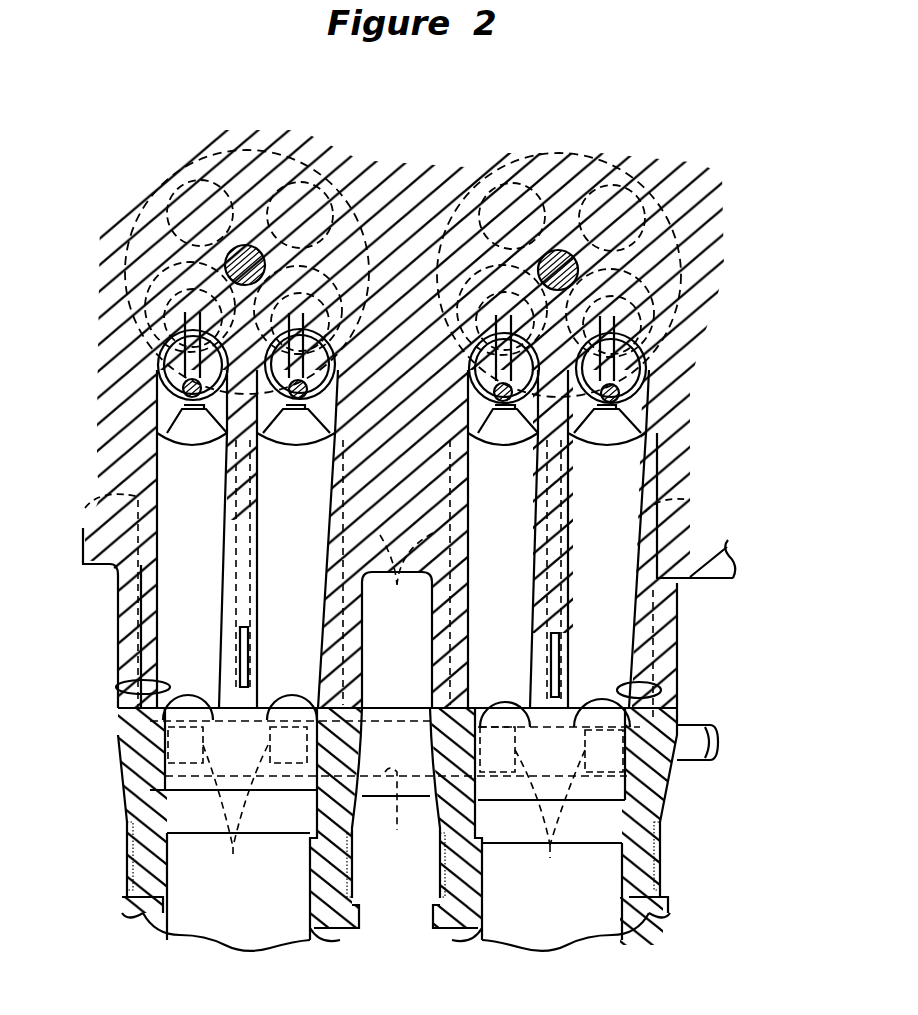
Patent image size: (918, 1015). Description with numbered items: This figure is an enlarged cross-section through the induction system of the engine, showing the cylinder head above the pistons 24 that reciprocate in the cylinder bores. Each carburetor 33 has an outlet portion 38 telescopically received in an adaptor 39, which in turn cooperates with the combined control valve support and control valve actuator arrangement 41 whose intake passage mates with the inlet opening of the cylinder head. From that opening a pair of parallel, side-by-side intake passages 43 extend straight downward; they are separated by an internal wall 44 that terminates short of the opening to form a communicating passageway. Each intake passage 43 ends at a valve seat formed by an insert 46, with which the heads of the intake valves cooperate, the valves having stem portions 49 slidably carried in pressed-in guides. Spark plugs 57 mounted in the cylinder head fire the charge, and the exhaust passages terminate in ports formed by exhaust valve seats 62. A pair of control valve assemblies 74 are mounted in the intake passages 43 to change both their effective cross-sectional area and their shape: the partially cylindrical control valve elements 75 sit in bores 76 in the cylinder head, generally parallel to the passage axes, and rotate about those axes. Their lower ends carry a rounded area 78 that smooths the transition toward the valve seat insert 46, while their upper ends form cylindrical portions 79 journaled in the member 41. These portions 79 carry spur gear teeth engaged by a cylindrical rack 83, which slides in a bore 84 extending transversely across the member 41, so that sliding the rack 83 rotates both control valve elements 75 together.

The piston 24 is at (620, 162).
The carburetor 33 is at (650, 943).
The outlet portion 38 is at (657, 892).
The adaptor 39 is at (120, 799).
The combined control valve support and control valve actuator arrangement 41 is at (670, 797).
The intake passage 43 is at (660, 690).
The internal wall 44 is at (577, 572).
The valve seat insert 46 is at (700, 280).
The stem portion 49 is at (180, 389).
The spark plug 57 is at (556, 252).
The exhaust valve seat 62 is at (682, 225).
The control valve assembly 74 is at (207, 662).
The control valve element 75 is at (190, 580).
The bore 76 is at (397, 592).
The rounded area 78 is at (632, 450).
The cylindrical portion 79 is at (389, 873).
The cylindrical rack 83 is at (697, 752).
The bore 84 is at (394, 814).